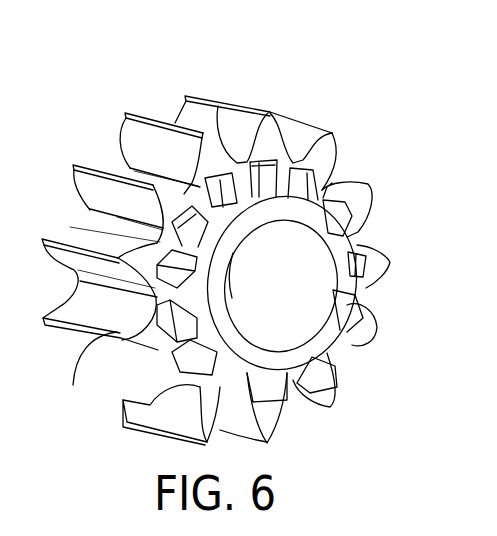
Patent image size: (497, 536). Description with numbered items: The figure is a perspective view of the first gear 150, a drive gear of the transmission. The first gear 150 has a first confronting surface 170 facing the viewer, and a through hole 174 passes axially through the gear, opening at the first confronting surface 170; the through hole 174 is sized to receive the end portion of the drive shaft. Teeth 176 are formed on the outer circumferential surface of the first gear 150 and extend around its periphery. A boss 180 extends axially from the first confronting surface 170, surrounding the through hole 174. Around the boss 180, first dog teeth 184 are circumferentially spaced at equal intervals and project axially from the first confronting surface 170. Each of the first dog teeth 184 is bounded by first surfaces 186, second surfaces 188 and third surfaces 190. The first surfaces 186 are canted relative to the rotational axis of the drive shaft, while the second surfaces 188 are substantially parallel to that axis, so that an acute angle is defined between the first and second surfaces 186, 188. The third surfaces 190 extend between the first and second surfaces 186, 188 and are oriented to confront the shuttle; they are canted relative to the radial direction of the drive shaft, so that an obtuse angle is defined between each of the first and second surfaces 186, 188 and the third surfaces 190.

The first gear 150 is at (351, 116).
The first confronting surface 170 is at (165, 296).
The through hole 174 is at (300, 313).
The teeth 176 is at (237, 123).
The boss 180 is at (335, 249).
The first dog teeth 184 is at (325, 183).
The first surfaces 186 is at (177, 267).
The second surfaces 188 is at (255, 181).
The third surfaces 190 is at (197, 224).